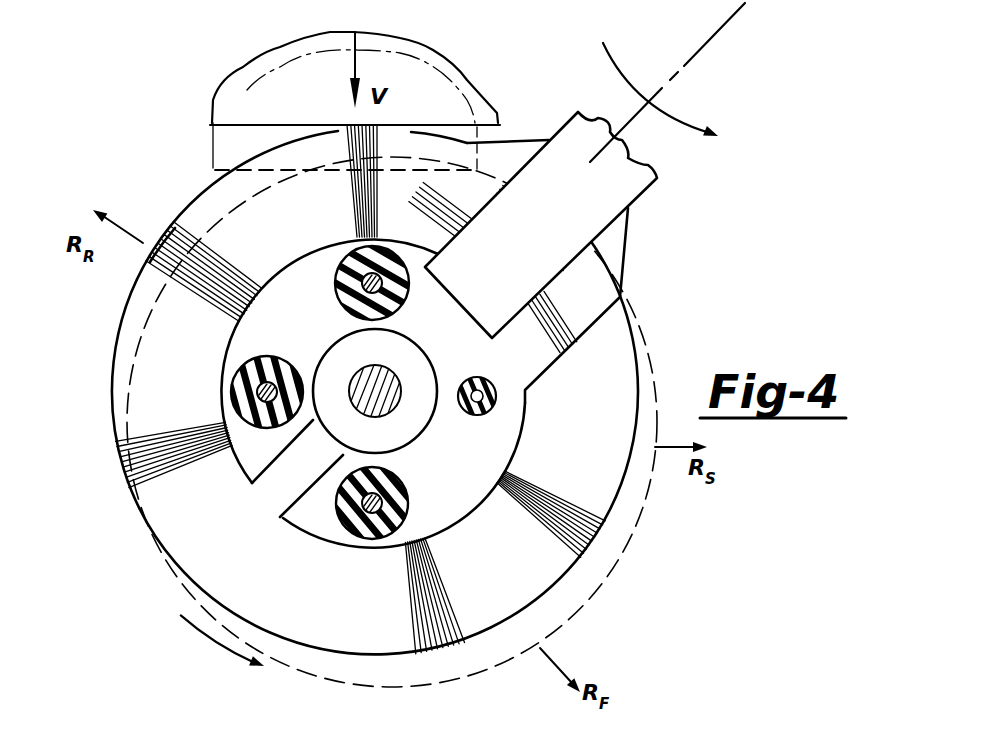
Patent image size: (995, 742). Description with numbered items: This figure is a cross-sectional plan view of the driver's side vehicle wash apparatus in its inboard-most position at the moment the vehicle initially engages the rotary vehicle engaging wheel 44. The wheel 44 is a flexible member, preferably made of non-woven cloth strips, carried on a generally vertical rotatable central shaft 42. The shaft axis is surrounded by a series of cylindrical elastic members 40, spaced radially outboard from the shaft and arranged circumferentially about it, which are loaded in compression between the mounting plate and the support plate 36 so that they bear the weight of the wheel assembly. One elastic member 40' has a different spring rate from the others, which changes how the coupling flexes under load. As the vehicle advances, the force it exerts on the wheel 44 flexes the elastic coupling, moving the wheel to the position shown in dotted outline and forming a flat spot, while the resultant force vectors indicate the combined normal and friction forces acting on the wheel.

The support plate 36 is at (600, 529).
The elastic members 40 is at (278, 498).
The elastic member 40' is at (575, 396).
The central shaft 42 is at (348, 388).
The vehicle engaging wheel 44 is at (140, 267).